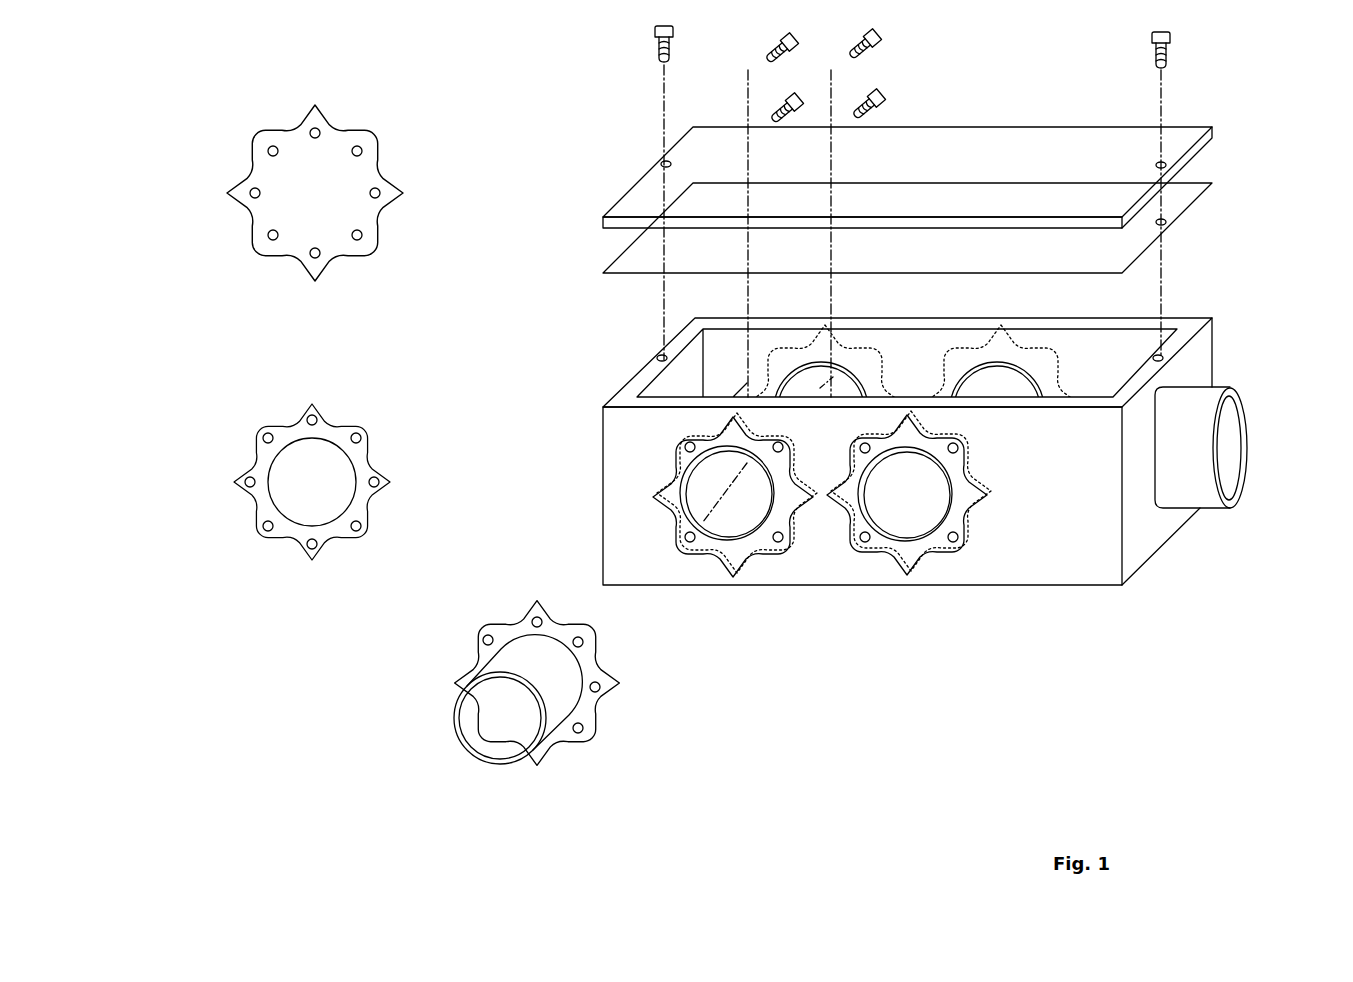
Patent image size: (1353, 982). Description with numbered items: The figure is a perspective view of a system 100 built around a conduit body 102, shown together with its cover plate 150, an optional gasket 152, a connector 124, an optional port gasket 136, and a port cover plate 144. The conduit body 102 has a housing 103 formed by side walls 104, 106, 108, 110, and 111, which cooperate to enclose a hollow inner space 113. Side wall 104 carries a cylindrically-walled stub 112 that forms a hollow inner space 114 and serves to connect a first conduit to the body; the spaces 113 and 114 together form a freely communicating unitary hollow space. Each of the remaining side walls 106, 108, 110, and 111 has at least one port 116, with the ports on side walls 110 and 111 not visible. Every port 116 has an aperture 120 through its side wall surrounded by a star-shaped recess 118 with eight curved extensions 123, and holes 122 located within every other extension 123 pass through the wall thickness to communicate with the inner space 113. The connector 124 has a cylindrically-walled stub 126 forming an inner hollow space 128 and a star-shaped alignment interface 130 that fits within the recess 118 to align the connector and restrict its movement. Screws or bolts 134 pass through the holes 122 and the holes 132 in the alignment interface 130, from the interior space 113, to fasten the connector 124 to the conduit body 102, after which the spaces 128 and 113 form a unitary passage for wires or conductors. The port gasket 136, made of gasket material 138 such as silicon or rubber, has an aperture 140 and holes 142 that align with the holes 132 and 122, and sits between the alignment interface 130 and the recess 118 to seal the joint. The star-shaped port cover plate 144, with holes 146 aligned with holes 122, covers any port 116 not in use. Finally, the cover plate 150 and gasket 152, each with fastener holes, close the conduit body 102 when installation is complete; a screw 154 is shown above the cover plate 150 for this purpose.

The system 100 is at (995, 760).
The conduit body 102 is at (1120, 600).
The housing 103 is at (1047, 552).
The side wall 104 is at (1190, 362).
The side wall 106 is at (1170, 315).
The side wall 108 is at (1036, 570).
The side wall 110 is at (622, 390).
The side wall 111 is at (847, 587).
The cylindrically-walled stub 112 is at (1203, 500).
The hollow inner space 113 is at (727, 367).
The hollow inner space 114 is at (1228, 475).
The port 116 is at (818, 330).
The recess 118 is at (915, 580).
The aperture 120 is at (896, 508).
The hole 122 is at (866, 542).
The extension 123 is at (965, 455).
The connector 124 is at (507, 727).
The cylindrically-walled stub 126 is at (500, 767).
The inner hollow space 128 is at (513, 735).
The alignment interface 130 is at (495, 627).
The hole 132 is at (488, 634).
The screws or bolts 134 is at (882, 105).
The port gasket 136 is at (273, 527).
The gasket material 138 is at (290, 555).
The aperture 140 is at (328, 497).
The hole 142 is at (265, 435).
The port cover plate 144 is at (235, 278).
The hole 146 is at (268, 150).
The cover plate 150 is at (1190, 137).
The gasket 152 is at (1187, 195).
The cover screw 154 is at (1166, 55).